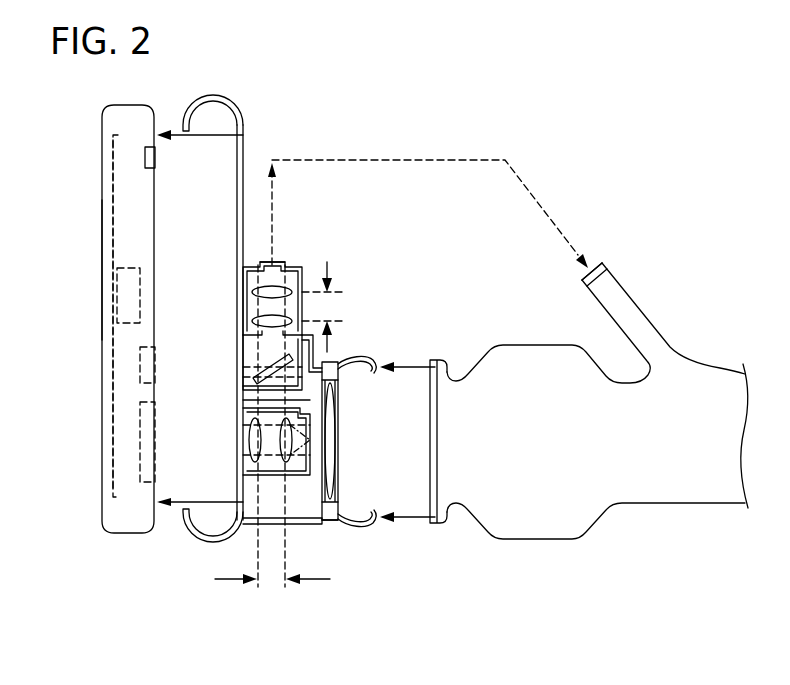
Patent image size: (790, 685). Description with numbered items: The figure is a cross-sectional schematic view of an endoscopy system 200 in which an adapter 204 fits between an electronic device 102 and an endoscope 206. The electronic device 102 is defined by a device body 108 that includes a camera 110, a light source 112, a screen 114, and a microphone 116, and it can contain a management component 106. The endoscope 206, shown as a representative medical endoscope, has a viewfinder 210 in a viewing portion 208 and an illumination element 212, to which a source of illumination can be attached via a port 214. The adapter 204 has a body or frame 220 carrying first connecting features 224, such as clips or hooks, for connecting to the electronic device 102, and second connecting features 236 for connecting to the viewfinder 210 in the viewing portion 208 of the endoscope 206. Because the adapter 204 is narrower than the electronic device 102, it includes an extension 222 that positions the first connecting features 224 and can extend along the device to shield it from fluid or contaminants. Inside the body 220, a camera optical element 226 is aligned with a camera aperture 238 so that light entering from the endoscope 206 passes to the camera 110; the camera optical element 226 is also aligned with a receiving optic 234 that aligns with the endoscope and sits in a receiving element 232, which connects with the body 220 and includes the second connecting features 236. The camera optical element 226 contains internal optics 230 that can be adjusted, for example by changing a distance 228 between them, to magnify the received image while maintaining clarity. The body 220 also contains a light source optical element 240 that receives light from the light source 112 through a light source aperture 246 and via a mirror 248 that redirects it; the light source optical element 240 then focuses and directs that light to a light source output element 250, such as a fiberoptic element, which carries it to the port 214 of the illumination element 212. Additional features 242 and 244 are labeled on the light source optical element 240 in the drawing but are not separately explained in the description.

The electronic device 102 is at (85, 535).
The management component 106 is at (117, 300).
The device body 108 is at (147, 233).
The camera 110 is at (140, 420).
The light source 112 is at (140, 360).
The screen 114 is at (103, 270).
The microphone 116 is at (144, 163).
The endoscopy system 200 is at (575, 134).
The adapter 204 is at (296, 353).
The endoscope 206 is at (546, 398).
The viewing portion 208 is at (438, 525).
The viewfinder 210 is at (420, 445).
The illumination element 212 is at (663, 281).
The port 214 is at (610, 242).
The body or frame 220 is at (300, 524).
The extension 222 is at (245, 140).
The first connecting features 224 is at (215, 96).
The camera optical element 226 is at (278, 402).
The distance 228 is at (268, 588).
The internal optics 230 is at (286, 462).
The receiving element 232 is at (333, 524).
The receiving optic 234 is at (334, 428).
The second connecting features 236 is at (373, 358).
The camera aperture 238 is at (236, 435).
The light source optical element 240 is at (252, 402).
The adjustment range 242 is at (330, 312).
The lens 244 is at (250, 292).
The light source aperture 246 is at (290, 348).
The mirror 248 is at (275, 382).
The light source output element 250 is at (280, 262).